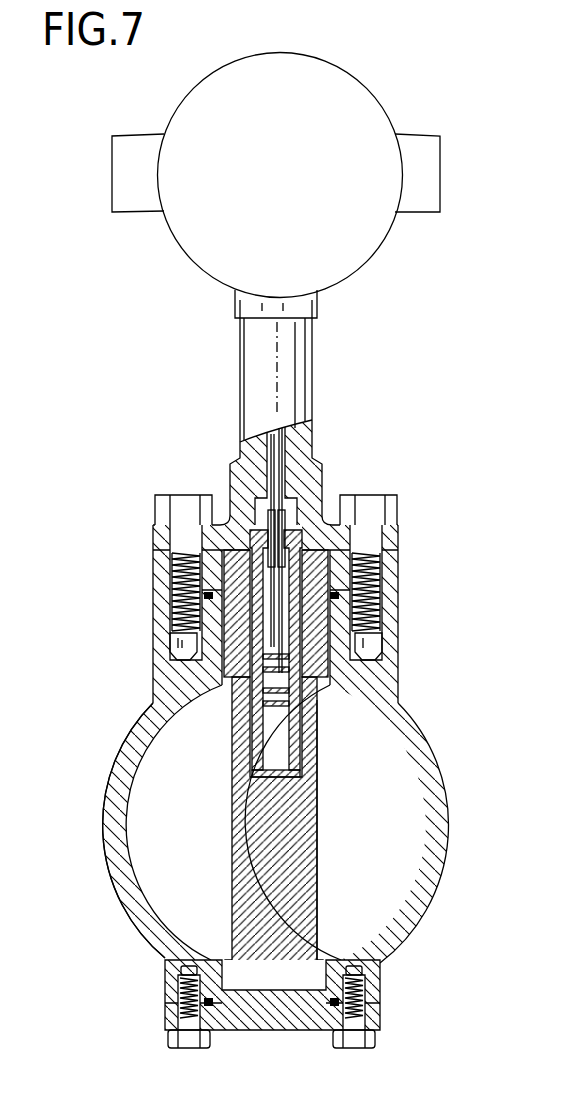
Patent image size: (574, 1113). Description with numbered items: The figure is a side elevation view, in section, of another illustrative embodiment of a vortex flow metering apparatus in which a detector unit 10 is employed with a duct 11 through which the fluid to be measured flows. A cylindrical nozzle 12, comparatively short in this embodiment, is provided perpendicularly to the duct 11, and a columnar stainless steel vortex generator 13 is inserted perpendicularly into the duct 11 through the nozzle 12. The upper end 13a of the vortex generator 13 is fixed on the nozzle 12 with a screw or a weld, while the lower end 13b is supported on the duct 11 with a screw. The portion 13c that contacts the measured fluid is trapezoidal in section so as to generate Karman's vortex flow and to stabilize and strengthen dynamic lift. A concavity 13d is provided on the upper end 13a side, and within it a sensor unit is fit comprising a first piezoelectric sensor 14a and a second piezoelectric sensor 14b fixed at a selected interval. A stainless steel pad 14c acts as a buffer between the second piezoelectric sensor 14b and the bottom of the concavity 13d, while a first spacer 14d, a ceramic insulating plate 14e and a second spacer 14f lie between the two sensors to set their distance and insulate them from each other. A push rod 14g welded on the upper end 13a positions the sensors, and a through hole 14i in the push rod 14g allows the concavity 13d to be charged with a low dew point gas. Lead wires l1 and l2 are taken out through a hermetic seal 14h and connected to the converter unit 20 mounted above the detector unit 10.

The detector unit 10 is at (124, 917).
The duct 11 is at (425, 882).
The cylindrical nozzle 12 is at (378, 668).
The vortex generator 13 is at (232, 828).
The upper end 13a is at (398, 533).
The lower end 13b is at (245, 978).
The portion 13c is at (297, 898).
The concavity 13d is at (325, 686).
The first piezoelectric sensor 14a is at (176, 585).
The second piezoelectric sensor 14b is at (262, 703).
The pad 14c is at (258, 742).
The first spacer 14d is at (262, 690).
The insulating plate 14e is at (262, 657).
The second spacer 14f is at (176, 610).
The push rod 14g is at (168, 543).
The hermetic seal 14h is at (262, 522).
The through hole 14i is at (378, 598).
The converter unit 20 is at (337, 258).
The lead wire l1 is at (290, 442).
The lead wire l2 is at (287, 464).